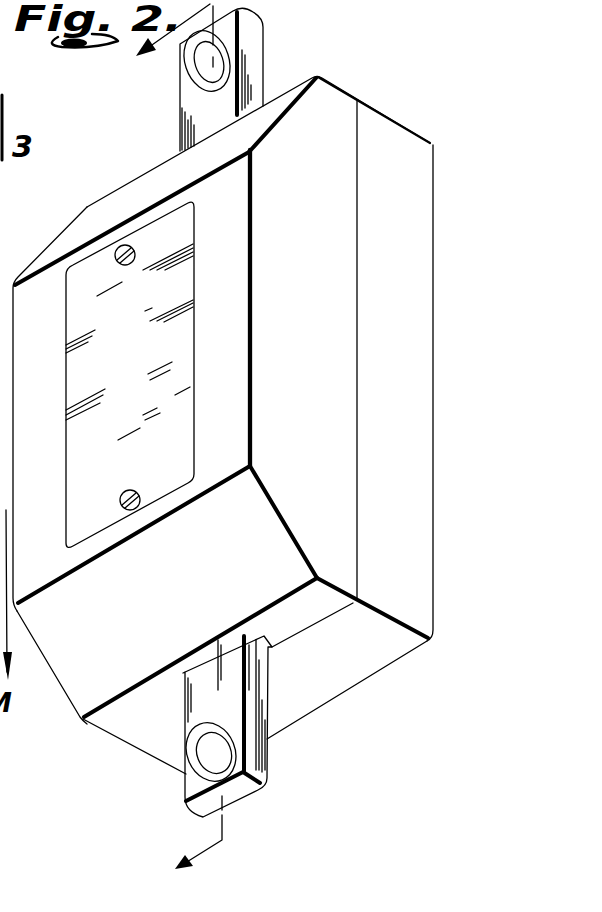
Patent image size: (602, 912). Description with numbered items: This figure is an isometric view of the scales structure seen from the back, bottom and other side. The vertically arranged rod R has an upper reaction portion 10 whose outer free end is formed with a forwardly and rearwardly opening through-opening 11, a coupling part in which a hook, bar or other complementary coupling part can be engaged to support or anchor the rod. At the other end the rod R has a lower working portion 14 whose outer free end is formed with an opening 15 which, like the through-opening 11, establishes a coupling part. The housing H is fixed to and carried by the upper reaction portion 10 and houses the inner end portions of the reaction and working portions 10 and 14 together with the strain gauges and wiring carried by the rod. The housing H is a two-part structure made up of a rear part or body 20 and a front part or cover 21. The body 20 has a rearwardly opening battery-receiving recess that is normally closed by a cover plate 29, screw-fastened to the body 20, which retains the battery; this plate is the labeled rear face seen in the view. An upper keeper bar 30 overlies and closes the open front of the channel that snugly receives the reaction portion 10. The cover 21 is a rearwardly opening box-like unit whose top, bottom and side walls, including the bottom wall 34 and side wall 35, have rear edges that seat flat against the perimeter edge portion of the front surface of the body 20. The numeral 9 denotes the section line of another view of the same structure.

The section line 9- 9 is at (167, 436).
The upper reaction portion 10 is at (248, 48).
The through-opening 11 is at (197, 73).
The lower working portion 14 is at (260, 743).
The opening 15 is at (195, 764).
The body 20 is at (134, 376).
The cover 21 is at (392, 131).
The cover plate 29 is at (178, 345).
The upper keeper bar 30 is at (63, 686).
The bottom wall 34 is at (157, 740).
The side wall 35 is at (380, 234).
The housing H is at (216, 410).
The rod R is at (265, 768).